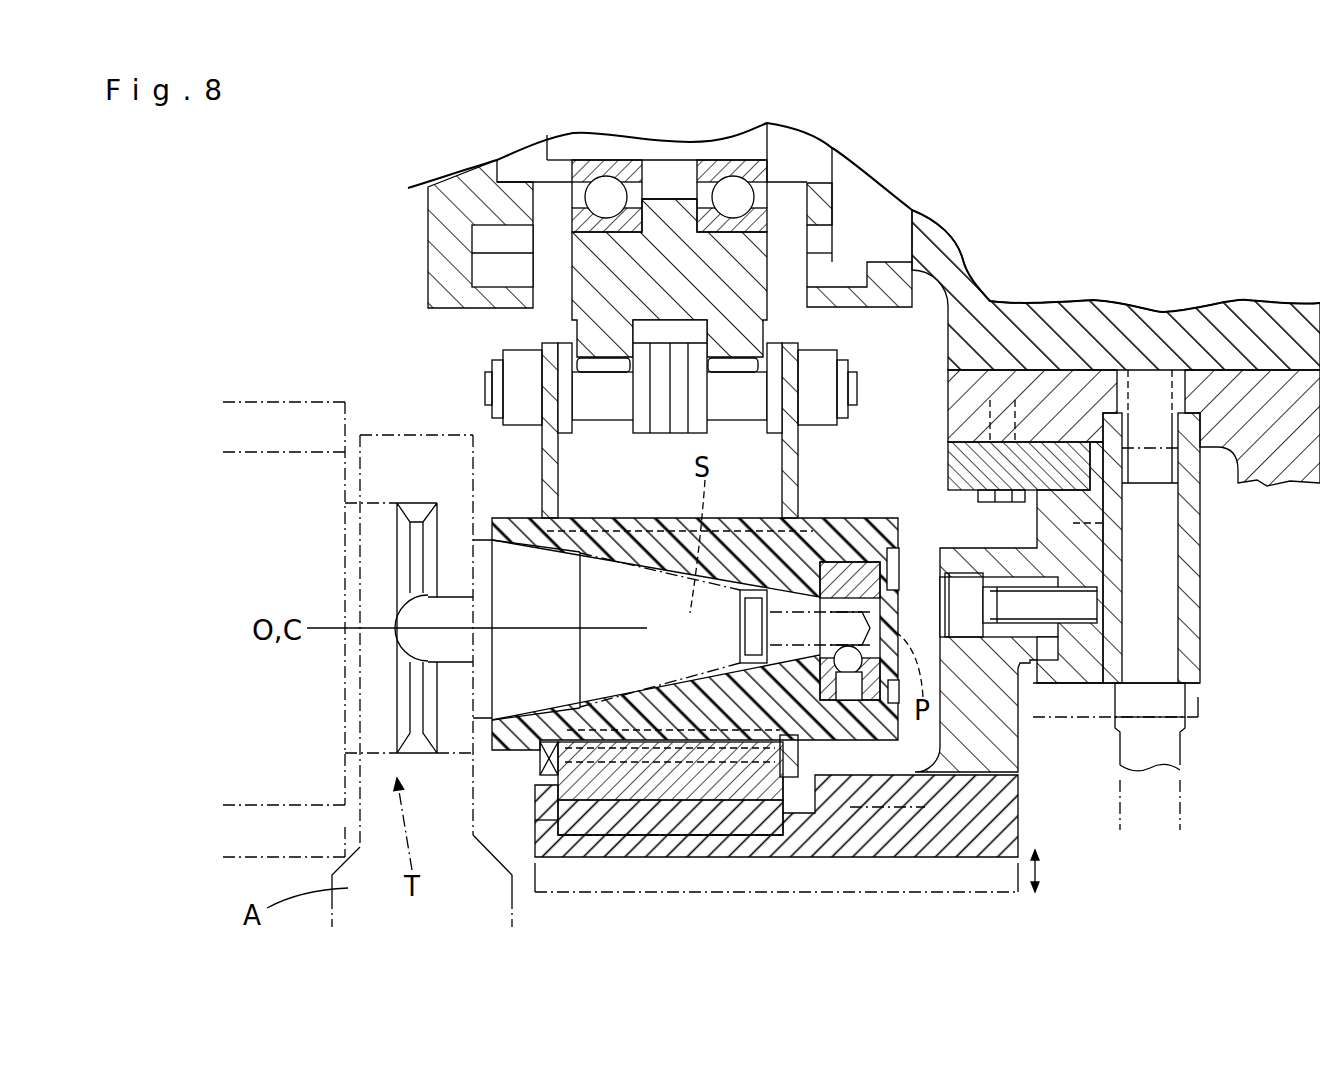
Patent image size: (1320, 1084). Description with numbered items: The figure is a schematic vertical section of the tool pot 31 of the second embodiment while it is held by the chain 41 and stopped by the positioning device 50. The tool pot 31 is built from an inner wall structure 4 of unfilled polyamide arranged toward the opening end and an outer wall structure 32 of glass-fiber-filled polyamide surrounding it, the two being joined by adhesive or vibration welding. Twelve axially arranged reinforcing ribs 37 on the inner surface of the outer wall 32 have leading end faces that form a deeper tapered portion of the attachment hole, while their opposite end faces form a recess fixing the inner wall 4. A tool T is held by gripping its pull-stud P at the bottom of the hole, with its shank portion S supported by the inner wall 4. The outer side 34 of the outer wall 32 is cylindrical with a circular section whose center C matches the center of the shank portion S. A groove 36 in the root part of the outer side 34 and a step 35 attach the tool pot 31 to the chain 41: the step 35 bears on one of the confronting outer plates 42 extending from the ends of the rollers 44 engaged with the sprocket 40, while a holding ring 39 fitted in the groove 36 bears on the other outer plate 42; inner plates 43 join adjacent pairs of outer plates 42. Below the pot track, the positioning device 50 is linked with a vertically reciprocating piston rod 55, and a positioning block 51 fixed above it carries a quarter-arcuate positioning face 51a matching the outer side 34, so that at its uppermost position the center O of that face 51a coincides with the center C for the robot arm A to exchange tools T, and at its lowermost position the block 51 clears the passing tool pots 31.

The inner wall structure 4 is at (537, 547).
The tool pot 31 is at (876, 503).
The outer wall structure 32 is at (647, 533).
The outer side 34 is at (765, 760).
The step 35 is at (543, 775).
The groove 36 is at (840, 737).
The reinforcing ribs 37 is at (683, 697).
The holding ring 39 is at (805, 783).
The sprocket 40 is at (578, 270).
The chain 41 is at (455, 373).
The outer plates 42 is at (547, 466).
The inner plates 43 is at (567, 343).
The rollers 44 is at (735, 410).
The positioning device 50 is at (867, 830).
The positioning block 51 is at (678, 790).
The positioning face 51a is at (622, 780).
The piston rod 55 is at (1160, 558).